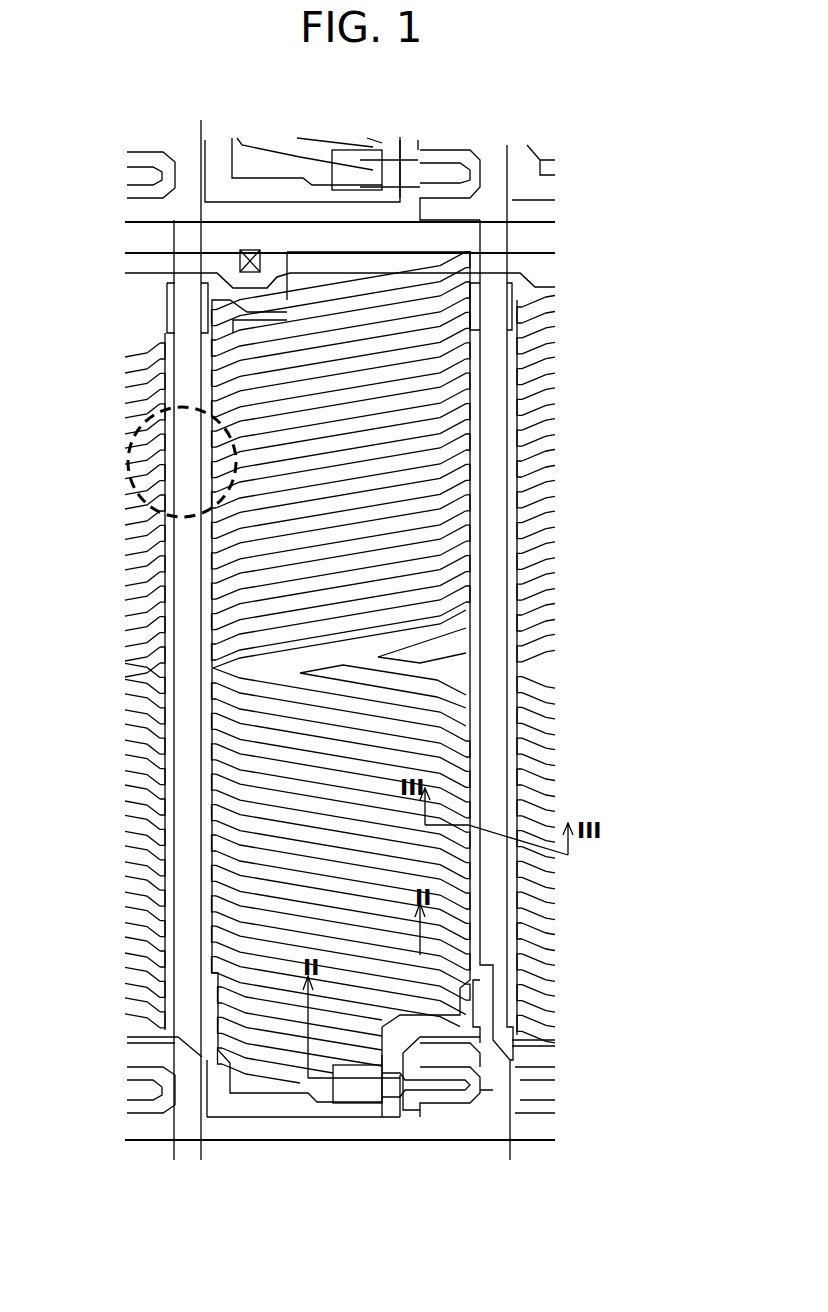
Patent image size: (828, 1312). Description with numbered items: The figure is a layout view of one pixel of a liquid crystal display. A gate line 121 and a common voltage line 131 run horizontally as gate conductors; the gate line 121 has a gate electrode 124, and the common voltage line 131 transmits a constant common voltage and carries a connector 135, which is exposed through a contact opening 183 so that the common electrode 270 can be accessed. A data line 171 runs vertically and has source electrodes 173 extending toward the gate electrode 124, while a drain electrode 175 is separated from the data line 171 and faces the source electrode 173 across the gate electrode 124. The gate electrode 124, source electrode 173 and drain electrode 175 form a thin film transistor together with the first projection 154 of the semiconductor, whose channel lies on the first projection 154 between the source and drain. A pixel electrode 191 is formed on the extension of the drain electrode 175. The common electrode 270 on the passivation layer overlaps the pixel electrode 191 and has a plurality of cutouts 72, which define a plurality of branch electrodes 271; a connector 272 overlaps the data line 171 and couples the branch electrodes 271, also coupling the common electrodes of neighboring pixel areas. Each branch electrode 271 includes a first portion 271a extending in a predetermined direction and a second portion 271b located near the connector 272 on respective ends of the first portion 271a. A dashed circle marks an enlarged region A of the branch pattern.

The gate line 121 is at (243, 1142).
The gate electrode 124 is at (385, 1104).
The common voltage line 131 is at (258, 203).
The connector 135 is at (212, 318).
The first projection 154 is at (410, 1112).
The data line 171 is at (508, 760).
The source electrode 173 is at (458, 1142).
The drain electrode 175 is at (345, 1104).
The contact opening 183 is at (243, 283).
The pixel electrode 191 is at (376, 677).
The common electrode 270 is at (376, 667).
The branch electrode 271 is at (347, 607).
The first portion 271a is at (293, 505).
The second portion 271b is at (232, 510).
The connector 272 is at (510, 568).
The cutout 72 is at (325, 762).
The enlarged region A is at (150, 420).